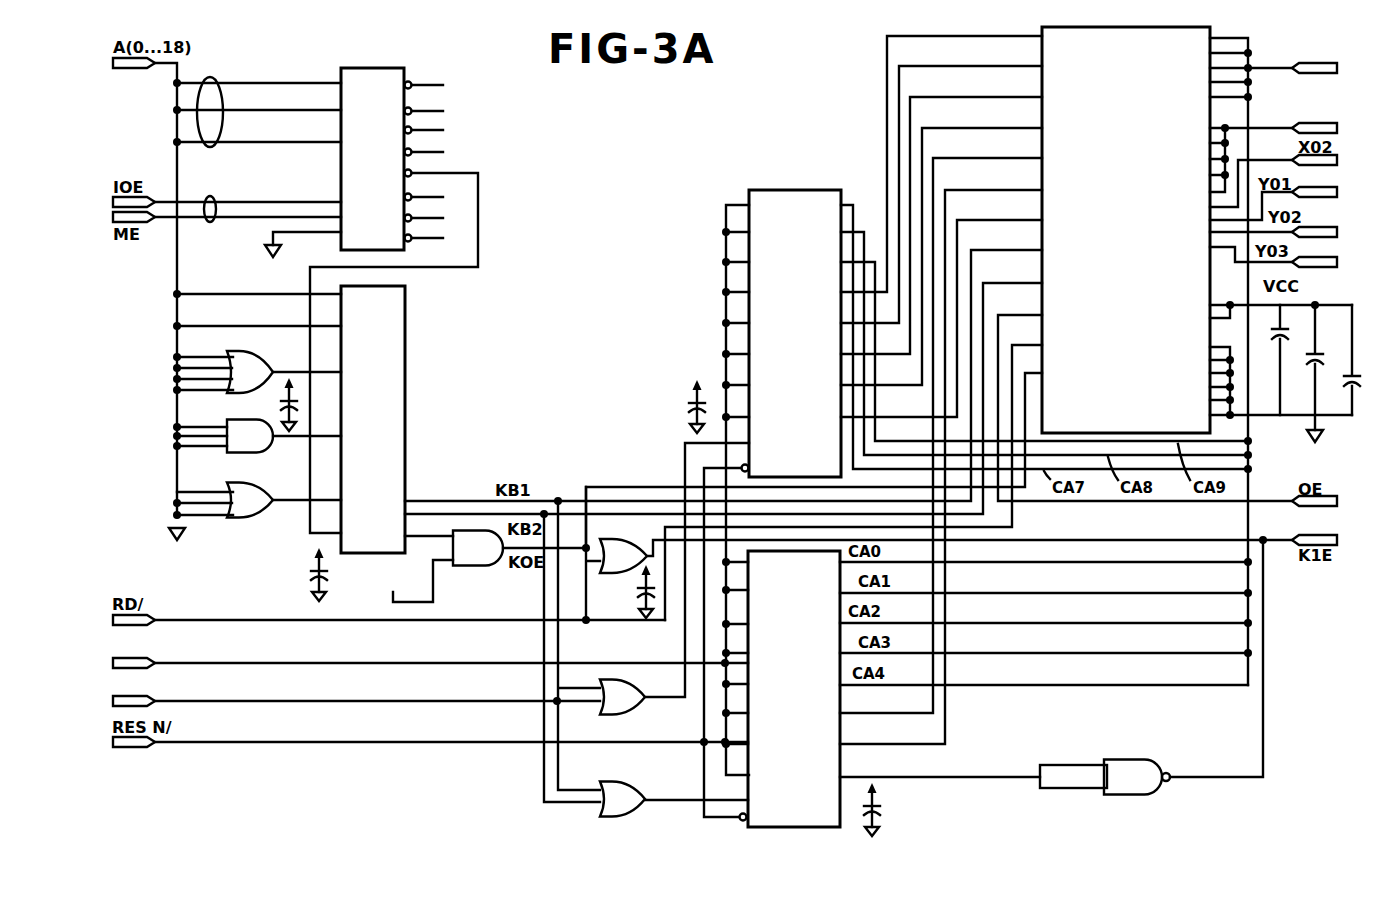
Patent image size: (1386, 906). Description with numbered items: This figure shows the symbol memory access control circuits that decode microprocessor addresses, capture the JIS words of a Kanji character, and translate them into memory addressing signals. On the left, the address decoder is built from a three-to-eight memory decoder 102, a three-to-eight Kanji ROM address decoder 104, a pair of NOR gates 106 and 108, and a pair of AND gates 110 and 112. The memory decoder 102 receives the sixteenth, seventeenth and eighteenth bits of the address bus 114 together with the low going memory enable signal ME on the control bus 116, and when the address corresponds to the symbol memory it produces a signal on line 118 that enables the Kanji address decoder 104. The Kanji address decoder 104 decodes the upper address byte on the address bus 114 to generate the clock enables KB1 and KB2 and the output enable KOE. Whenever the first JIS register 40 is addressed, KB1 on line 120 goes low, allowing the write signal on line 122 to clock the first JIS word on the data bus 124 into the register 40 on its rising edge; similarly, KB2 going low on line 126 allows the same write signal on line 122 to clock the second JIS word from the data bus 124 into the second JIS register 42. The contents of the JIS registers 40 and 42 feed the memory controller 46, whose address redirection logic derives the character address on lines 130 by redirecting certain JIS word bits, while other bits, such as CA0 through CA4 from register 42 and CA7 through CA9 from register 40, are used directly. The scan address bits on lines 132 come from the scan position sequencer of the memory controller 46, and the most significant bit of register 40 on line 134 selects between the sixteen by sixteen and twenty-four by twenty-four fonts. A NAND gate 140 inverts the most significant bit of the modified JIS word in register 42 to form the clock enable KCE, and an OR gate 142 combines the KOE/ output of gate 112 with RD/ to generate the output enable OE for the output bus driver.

The first JIS register 40 is at (773, 190).
The second JIS register 42 is at (750, 757).
The memory controller 46 is at (1042, 34).
The 3:8 memory decoder 102 is at (378, 70).
The 3:8 Kanji ROM address decoder 104 is at (403, 345).
The NOR gate 106 is at (253, 361).
The NOR gate 108 is at (245, 512).
The AND gate 110 is at (257, 446).
The AND gate 112 is at (468, 567).
The address bus 114 is at (214, 78).
The control bus 116 is at (214, 196).
The line 118 is at (478, 208).
The line 120 is at (578, 688).
The line 122 is at (252, 699).
The data bus 124 is at (236, 661).
The line 126 is at (570, 799).
The lines 130 is at (1258, 65).
The lines 132 is at (1256, 126).
The line 134 is at (957, 228).
The NAND gate 140 is at (1130, 762).
The OR gate 142 is at (607, 569).